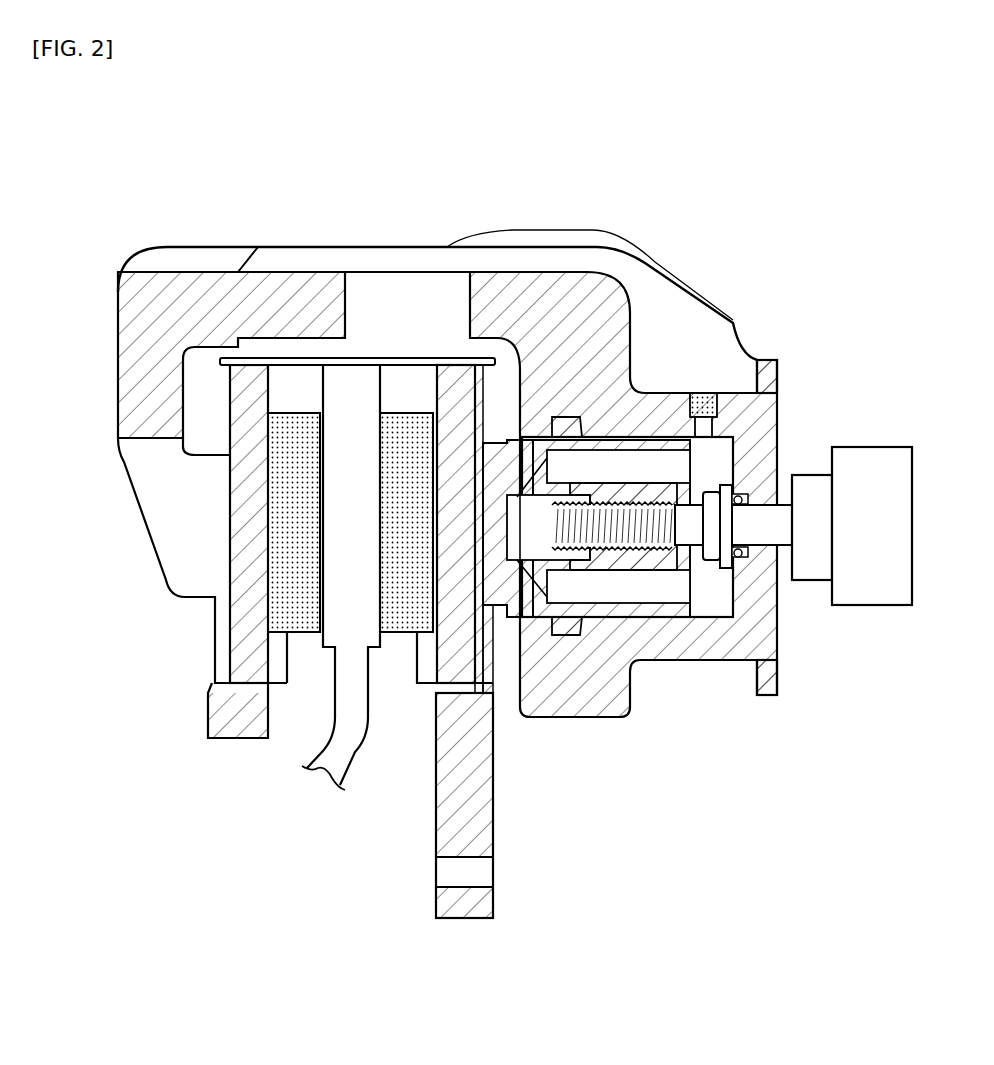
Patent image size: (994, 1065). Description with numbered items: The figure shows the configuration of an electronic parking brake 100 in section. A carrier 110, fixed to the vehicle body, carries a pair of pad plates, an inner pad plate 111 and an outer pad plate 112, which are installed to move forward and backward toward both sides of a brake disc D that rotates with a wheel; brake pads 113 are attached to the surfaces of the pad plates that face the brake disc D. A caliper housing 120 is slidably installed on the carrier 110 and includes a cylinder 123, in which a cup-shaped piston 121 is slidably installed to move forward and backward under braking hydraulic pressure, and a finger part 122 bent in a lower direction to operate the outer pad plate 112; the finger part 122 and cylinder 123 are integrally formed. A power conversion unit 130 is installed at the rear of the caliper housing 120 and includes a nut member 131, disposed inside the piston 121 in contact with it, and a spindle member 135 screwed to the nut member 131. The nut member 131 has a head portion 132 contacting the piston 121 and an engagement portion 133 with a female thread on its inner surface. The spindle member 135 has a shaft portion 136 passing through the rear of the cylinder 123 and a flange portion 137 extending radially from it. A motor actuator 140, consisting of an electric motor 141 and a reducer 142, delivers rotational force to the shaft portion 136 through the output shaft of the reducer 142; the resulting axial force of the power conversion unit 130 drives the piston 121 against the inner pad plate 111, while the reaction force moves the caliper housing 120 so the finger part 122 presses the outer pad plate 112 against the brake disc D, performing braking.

The electronic parking brake 100 is at (536, 122).
The carrier 110 is at (450, 833).
The inner pad plate 111 is at (450, 662).
The outer pad plate 112 is at (240, 628).
The brake pads 113 is at (300, 634).
The caliper housing 120 is at (423, 436).
The piston 121 is at (492, 600).
The finger part 122 is at (148, 495).
The cylinder 123 is at (768, 364).
The power conversion unit 130 is at (658, 539).
The nut member 131 is at (595, 659).
The head portion 132 is at (547, 610).
The engagement portion 133 is at (623, 567).
The spindle member 135 is at (757, 661).
The shaft portion 136 is at (745, 537).
The flange portion 137 is at (710, 548).
The motor actuator 140 is at (846, 475).
The electric motor 141 is at (860, 454).
The reducer 142 is at (818, 477).
The brake disc D is at (340, 757).